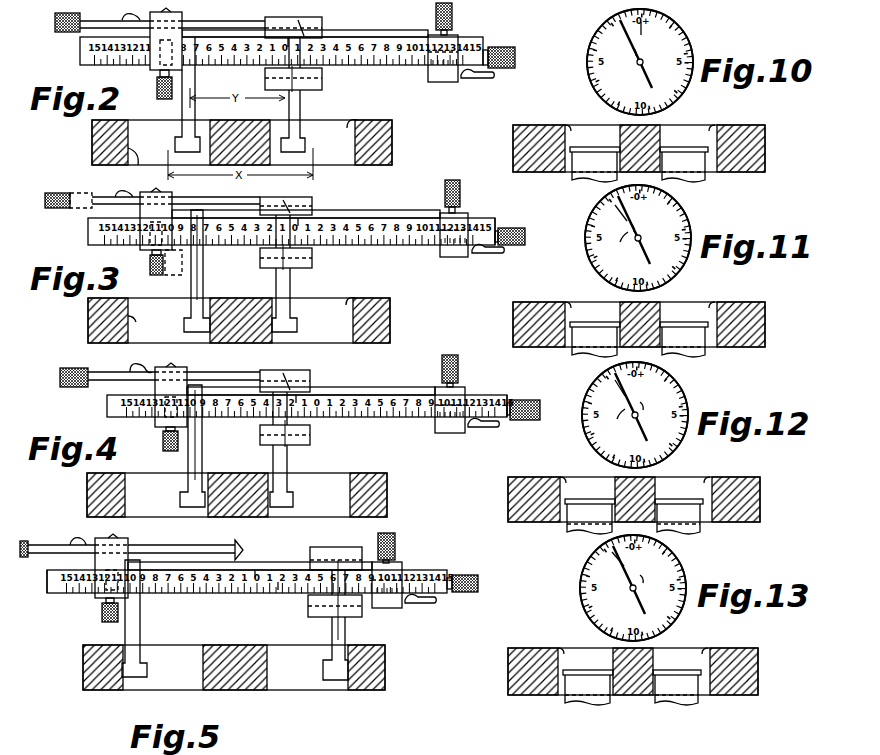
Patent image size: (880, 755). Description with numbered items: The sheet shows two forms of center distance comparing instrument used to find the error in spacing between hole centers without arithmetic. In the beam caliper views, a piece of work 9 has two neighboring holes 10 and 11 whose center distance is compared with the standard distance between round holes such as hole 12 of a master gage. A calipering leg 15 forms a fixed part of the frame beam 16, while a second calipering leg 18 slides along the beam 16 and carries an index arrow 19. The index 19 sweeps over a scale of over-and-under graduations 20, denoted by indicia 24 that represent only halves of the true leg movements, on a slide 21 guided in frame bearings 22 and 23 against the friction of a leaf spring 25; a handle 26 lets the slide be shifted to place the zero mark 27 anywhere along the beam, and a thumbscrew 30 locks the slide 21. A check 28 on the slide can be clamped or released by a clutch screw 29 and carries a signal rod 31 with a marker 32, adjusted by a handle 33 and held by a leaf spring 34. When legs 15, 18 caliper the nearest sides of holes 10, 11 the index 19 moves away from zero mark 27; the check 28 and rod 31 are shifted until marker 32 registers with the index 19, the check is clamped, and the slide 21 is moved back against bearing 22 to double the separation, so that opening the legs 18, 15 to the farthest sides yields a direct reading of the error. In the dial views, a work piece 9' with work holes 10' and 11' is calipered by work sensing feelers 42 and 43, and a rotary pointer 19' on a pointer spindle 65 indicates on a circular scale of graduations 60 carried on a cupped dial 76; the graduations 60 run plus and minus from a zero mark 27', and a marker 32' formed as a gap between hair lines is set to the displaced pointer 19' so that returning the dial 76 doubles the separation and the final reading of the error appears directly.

In FIG. 2, the piece of work 9 is at (253, 140).
In FIG. 10, the work piece 9' is at (653, 143).
In FIG. 11, the work piece 9' is at (651, 315).
In FIG. 12, the work piece 9' is at (648, 493).
In FIG. 13, the work piece 9' is at (648, 666).
In FIG. 2, the hole 10 is at (132, 166).
In FIG. 3, the hole 10 is at (145, 316).
In FIG. 10, the work hole 10' is at (565, 115).
In FIG. 11, the work hole 10' is at (550, 294).
In FIG. 12, the work hole 10' is at (560, 469).
In FIG. 13, the work hole 10' is at (560, 640).
In FIG. 2, the hole 11 is at (361, 115).
In FIG. 3, the hole 11 is at (360, 292).
In FIG. 10, the work hole 11' is at (725, 115).
In FIG. 11, the work hole 11' is at (724, 292).
In FIG. 12, the work hole 11' is at (720, 468).
In FIG. 13, the work hole 11' is at (719, 639).
In FIG. 3, the round hole 12 is at (326, 343).
In FIG. 2, the calipering leg 15 is at (176, 140).
In FIG. 3, the calipering leg 15 is at (205, 300).
In FIG. 4, the calipering leg 15 is at (185, 497).
In FIG. 5, the calipering leg 15 is at (136, 660).
In FIG. 2, the frame beam 16 is at (396, 38).
In FIG. 3, the frame beam 16 is at (376, 218).
In FIG. 4, the frame beam 16 is at (372, 395).
In FIG. 5, the frame beam 16 is at (190, 594).
In FIG. 2, the calipering leg 18 is at (300, 140).
In FIG. 3, the calipering leg 18 is at (297, 322).
In FIG. 4, the calipering leg 18 is at (302, 372).
In FIG. 5, the calipering leg 18 is at (340, 542).
In FIG. 2, the index arrow 19 is at (309, 84).
In FIG. 3, the index arrow 19 is at (301, 263).
In FIG. 4, the index arrow 19 is at (301, 437).
In FIG. 5, the index arrow 19 is at (324, 617).
In FIG. 10, the pointer 19' is at (629, 54).
In FIG. 11, the pointer 19' is at (617, 247).
In FIG. 12, the pointer 19' is at (612, 421).
In FIG. 13, the pointer 19' is at (620, 580).
In FIG. 4, the scale of over-and-under graduations 20 is at (478, 420).
In FIG. 5, the scale of over-and-under graduations 20 is at (280, 584).
In FIG. 3, the slide 21 is at (482, 218).
In FIG. 4, the slide 21 is at (410, 395).
In FIG. 5, the slide 21 is at (50, 593).
In FIG. 3, the frame bearing 22 is at (203, 255).
In FIG. 4, the frame bearing 22 is at (200, 430).
In FIG. 3, the frame bearing 23 is at (446, 213).
In FIG. 4, the frame bearing 23 is at (458, 390).
In FIG. 5, the frame bearing 23 is at (400, 572).
In FIG. 2, the indicia 24 is at (356, 32).
In FIG. 3, the indicia 24 is at (345, 213).
In FIG. 4, the indicia 24 is at (340, 388).
In FIG. 5, the leaf spring 25 is at (422, 606).
In FIG. 3, the handle 26 is at (510, 228).
In FIG. 4, the handle 26 is at (521, 421).
In FIG. 2, the zero mark 27 is at (319, 28).
In FIG. 3, the zero mark 27 is at (321, 206).
In FIG. 4, the zero mark 27 is at (318, 379).
In FIG. 5, the zero mark 27 is at (240, 601).
In FIG. 10, the zero mark 27' is at (651, 52).
In FIG. 11, the zero mark 27' is at (650, 219).
In FIG. 12, the zero mark 27' is at (655, 412).
In FIG. 13, the zero mark 27' is at (655, 585).
In FIG. 2, the check 28 is at (182, 20).
In FIG. 3, the check 28 is at (140, 211).
In FIG. 4, the check 28 is at (187, 372).
In FIG. 5, the check 28 is at (128, 548).
In FIG. 2, the clutch screw 29 is at (165, 99).
In FIG. 3, the clutch screw 29 is at (170, 278).
In FIG. 4, the clutch screw 29 is at (163, 451).
In FIG. 3, the thumbscrew 30 is at (460, 176).
In FIG. 4, the thumbscrew 30 is at (452, 352).
In FIG. 3, the signal rod 31 is at (102, 197).
In FIG. 2, the marker 32 is at (287, 19).
In FIG. 3, the marker 32 is at (286, 194).
In FIG. 4, the marker 32 is at (285, 370).
In FIG. 5, the marker 32 is at (247, 541).
In FIG. 10, the marker 32' is at (658, 33).
In FIG. 11, the marker 32' is at (614, 221).
In FIG. 12, the marker 32' is at (638, 392).
In FIG. 13, the marker 32' is at (613, 562).
In FIG. 3, the handle 33 is at (58, 193).
In FIG. 4, the handle 33 is at (72, 368).
In FIG. 4, the leaf spring 34 is at (137, 366).
In FIG. 10, the work sensing feeler 42 is at (595, 164).
In FIG. 11, the work sensing feeler 42 is at (595, 339).
In FIG. 12, the work sensing feeler 42 is at (590, 516).
In FIG. 13, the work sensing feeler 42 is at (588, 687).
In FIG. 10, the work sensing feeler 43 is at (684, 164).
In FIG. 11, the work sensing feeler 43 is at (684, 339).
In FIG. 12, the work sensing feeler 43 is at (679, 516).
In FIG. 13, the work sensing feeler 43 is at (677, 687).
In FIG. 10, the circular scale of graduations 60 is at (687, 74).
In FIG. 11, the circular scale of graduations 60 is at (682, 213).
In FIG. 12, the circular scale of graduations 60 is at (596, 385).
In FIG. 13, the circular scale of graduations 60 is at (672, 561).
In FIG. 11, the pointer spindle 65 is at (641, 230).
In FIG. 12, the pointer spindle 65 is at (630, 425).
In FIG. 10, the cupped dial 76 is at (588, 52).
In FIG. 11, the cupped dial 76 is at (606, 266).
In FIG. 12, the cupped dial 76 is at (588, 404).
In FIG. 13, the cupped dial 76 is at (590, 606).